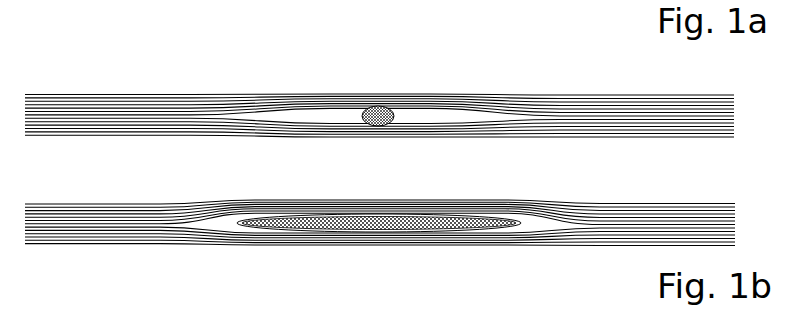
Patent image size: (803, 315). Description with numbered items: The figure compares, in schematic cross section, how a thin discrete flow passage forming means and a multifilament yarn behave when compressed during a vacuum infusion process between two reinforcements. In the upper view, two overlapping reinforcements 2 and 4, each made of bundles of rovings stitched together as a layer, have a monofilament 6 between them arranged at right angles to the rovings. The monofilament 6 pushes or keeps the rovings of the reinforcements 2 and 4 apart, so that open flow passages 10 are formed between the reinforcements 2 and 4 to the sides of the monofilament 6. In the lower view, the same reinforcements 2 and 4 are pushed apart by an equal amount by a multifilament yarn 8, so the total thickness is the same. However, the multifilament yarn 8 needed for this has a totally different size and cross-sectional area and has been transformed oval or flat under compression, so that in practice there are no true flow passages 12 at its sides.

In FIG. 1a, the reinforcement 2 is at (379, 99).
In FIG. 1b, the reinforcement 2 is at (380, 222).
In FIG. 1a, the reinforcement 4 is at (280, 137).
In FIG. 1b, the reinforcement 4 is at (265, 247).
In FIG. 1a, the monofilament 6 is at (380, 105).
In FIG. 1b, the multifilament yarn 8 is at (348, 245).
In FIG. 1a, the open flow passages 10 is at (338, 120).
In FIG. 1b, the flow passages 12 is at (530, 228).